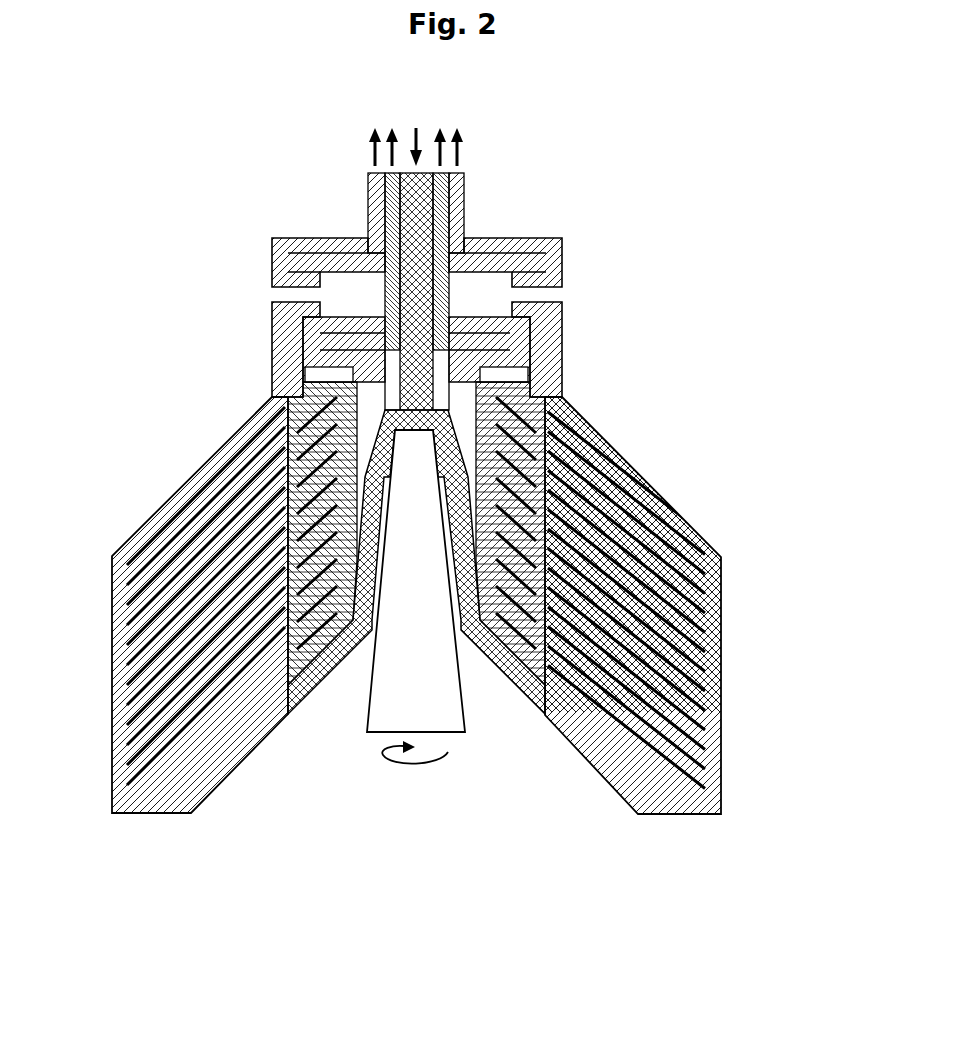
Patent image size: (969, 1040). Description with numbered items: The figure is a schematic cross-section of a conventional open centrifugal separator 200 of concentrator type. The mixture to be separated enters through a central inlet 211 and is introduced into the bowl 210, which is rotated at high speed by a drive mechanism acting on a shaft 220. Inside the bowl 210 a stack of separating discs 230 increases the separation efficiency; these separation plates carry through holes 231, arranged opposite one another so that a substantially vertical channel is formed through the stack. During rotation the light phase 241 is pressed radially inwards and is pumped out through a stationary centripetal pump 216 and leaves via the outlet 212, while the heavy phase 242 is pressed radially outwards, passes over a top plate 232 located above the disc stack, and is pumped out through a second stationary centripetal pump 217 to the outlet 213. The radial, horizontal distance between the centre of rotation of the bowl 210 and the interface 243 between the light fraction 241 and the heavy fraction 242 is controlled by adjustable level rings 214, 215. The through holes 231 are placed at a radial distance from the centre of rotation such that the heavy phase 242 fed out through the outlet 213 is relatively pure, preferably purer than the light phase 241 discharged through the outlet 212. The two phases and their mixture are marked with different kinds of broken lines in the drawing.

The open centrifugal separator 200 is at (232, 135).
The bowl 210 is at (722, 668).
The central inlet 211 is at (437, 237).
The outlet for light phase 212 is at (450, 220).
The outlet for heavy phase 213 is at (464, 198).
The adjustable level ring 214 is at (503, 372).
The adjustable level ring 215 is at (537, 293).
The centripetal pump 216 is at (307, 347).
The centripetal pump 217 is at (273, 263).
The shaft 220 is at (416, 597).
The separating discs 230 is at (136, 527).
The through holes 231 is at (286, 714).
The top plate 232 is at (180, 493).
The light phase 241 is at (524, 640).
The heavy phase 242 is at (713, 563).
The interface 243 is at (548, 712).